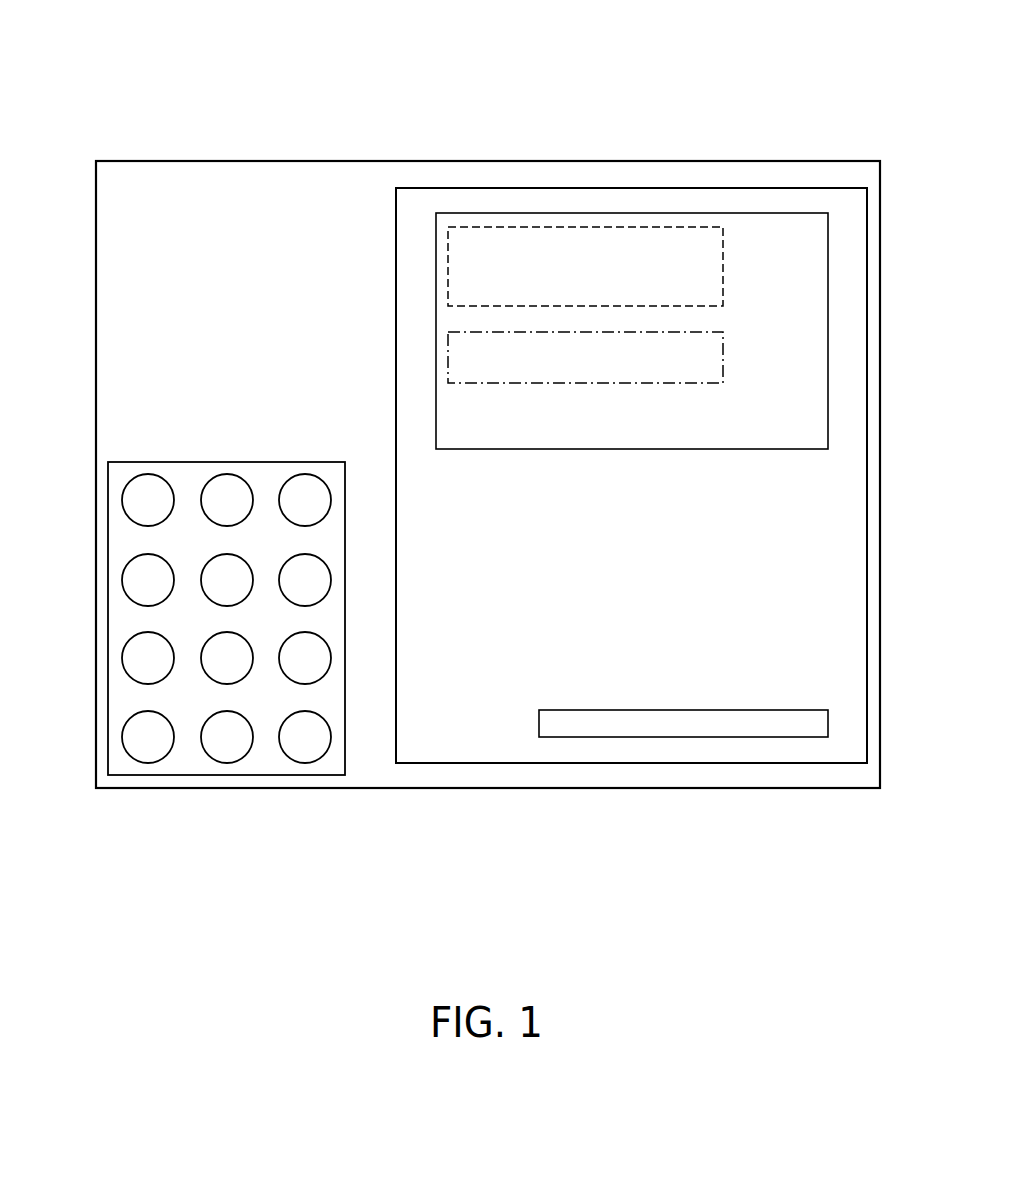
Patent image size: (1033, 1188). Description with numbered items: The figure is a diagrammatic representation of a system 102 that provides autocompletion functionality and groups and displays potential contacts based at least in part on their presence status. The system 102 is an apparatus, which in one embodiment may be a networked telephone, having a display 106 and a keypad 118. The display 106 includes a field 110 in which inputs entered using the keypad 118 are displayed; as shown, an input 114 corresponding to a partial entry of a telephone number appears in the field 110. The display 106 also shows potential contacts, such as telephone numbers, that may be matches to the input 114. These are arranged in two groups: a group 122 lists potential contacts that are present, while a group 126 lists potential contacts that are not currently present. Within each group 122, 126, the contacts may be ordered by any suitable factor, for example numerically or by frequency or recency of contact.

The system 102 is at (116, 52).
The display 106 is at (761, 188).
The group 122 is at (593, 227).
The group 126 is at (697, 385).
The field 110 is at (775, 737).
The input 114 is at (555, 737).
The keypad 118 is at (253, 775).